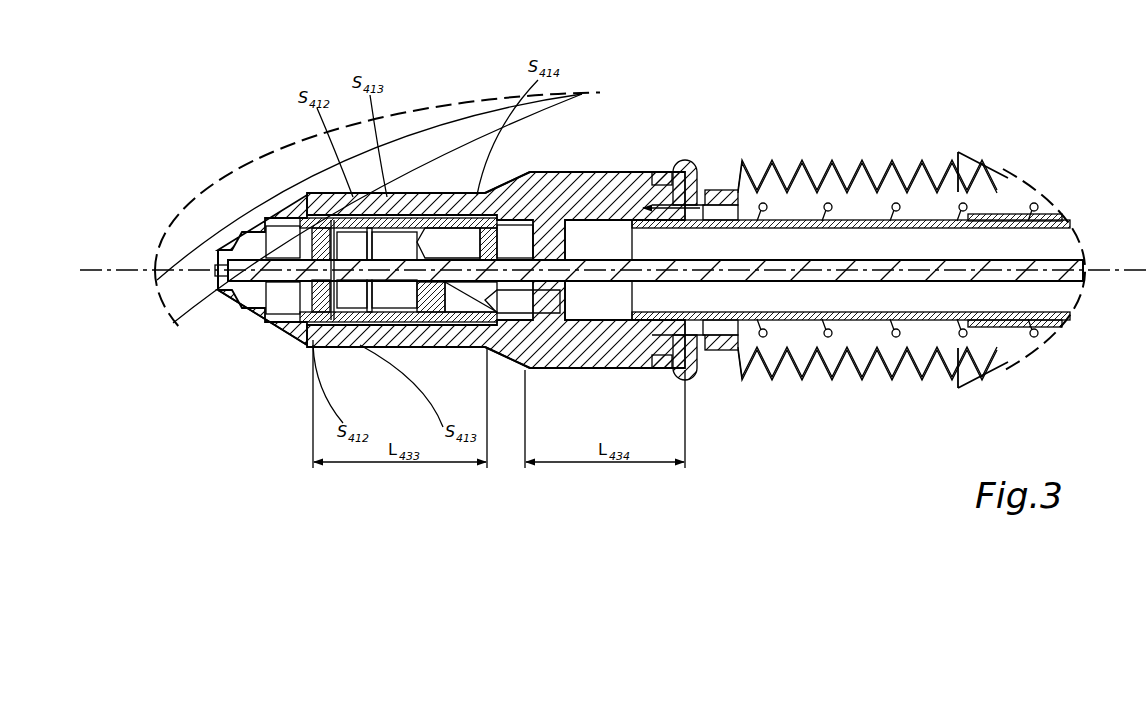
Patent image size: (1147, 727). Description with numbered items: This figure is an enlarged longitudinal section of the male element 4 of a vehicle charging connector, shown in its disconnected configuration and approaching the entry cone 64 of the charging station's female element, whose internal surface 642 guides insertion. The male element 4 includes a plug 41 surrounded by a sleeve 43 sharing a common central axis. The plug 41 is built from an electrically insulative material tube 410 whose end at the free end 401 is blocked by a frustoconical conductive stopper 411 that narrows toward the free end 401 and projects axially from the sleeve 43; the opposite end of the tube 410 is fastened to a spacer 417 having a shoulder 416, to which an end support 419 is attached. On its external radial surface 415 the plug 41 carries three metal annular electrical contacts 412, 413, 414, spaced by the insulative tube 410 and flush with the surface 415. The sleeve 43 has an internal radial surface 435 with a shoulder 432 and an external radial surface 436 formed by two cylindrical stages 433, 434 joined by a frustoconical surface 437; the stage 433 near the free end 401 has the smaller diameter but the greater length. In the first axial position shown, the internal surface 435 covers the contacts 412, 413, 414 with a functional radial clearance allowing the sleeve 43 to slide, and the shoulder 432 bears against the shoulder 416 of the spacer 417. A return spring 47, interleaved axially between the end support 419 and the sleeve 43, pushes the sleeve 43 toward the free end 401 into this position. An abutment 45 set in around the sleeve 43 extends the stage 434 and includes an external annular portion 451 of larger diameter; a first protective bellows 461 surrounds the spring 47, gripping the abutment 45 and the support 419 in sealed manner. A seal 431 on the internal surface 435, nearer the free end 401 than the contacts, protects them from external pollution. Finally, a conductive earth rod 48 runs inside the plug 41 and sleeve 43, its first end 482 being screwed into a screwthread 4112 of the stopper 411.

The male element 4 is at (297, 375).
The plug 41 is at (454, 229).
The sleeve 43 is at (633, 170).
The abutment 45 is at (725, 205).
The return spring 47 is at (963, 212).
The earth rod 48 is at (1050, 265).
The entry cone 64 is at (182, 243).
The internal surface 642 is at (187, 295).
The free end 401 is at (218, 280).
The electrically insulative material tube 410 is at (380, 347).
The frustoconical conductive stopper 411 is at (242, 325).
The electrical contact 412 is at (327, 345).
The electrical contact 413 is at (417, 347).
The electrical contact 414 is at (485, 347).
The external radial surface 415 is at (440, 190).
The shoulder 416 is at (632, 370).
The spacer 417 is at (922, 220).
The end support 419 is at (1045, 325).
The seal 431 is at (300, 197).
The shoulder 432 is at (640, 222).
The stage 433 is at (453, 192).
The stage 434 is at (692, 172).
The internal radial surface 435 is at (686, 311).
The external radial surface 436 is at (594, 170).
The frustoconical surface 437 is at (505, 173).
The external annular portion 451 is at (686, 165).
The first protective bellows 461 is at (840, 160).
The first end 482 is at (247, 265).
The screwthread 4112 is at (265, 405).